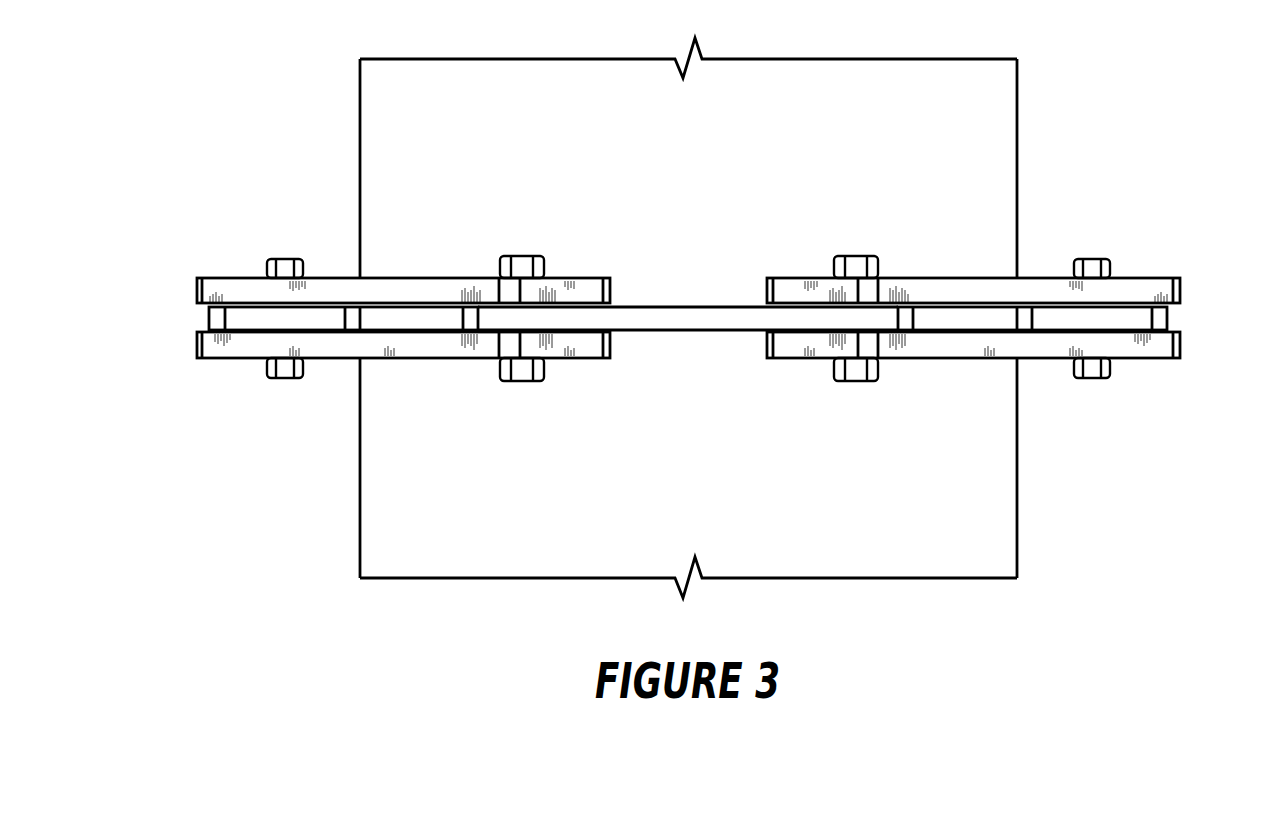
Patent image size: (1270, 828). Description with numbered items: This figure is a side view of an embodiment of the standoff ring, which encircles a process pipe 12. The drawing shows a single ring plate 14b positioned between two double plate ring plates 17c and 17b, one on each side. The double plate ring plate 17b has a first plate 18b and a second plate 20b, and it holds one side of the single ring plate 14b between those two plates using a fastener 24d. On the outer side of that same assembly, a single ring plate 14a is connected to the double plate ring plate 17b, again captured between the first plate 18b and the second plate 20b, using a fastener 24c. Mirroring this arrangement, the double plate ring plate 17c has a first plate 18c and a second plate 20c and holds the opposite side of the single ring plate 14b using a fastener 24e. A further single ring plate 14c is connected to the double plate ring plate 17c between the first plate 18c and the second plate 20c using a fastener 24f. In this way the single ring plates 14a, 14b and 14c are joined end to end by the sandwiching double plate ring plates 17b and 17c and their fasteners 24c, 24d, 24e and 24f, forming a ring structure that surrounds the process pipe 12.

The process pipe 12 is at (1017, 125).
The single ring plate 14a is at (1167, 318).
The single ring plate 14b is at (688, 306).
The single ring plate 14c is at (209, 318).
The double plate ring plate 17b is at (958, 240).
The double plate ring plate 17c is at (418, 240).
The first plate 18b is at (987, 278).
The first plate 18c is at (390, 278).
The second plate 20b is at (987, 358).
The second plate 20c is at (390, 358).
The fastener 24c is at (1092, 259).
The fastener 24d is at (856, 256).
The fastener 24e is at (522, 256).
The fastener 24f is at (285, 259).